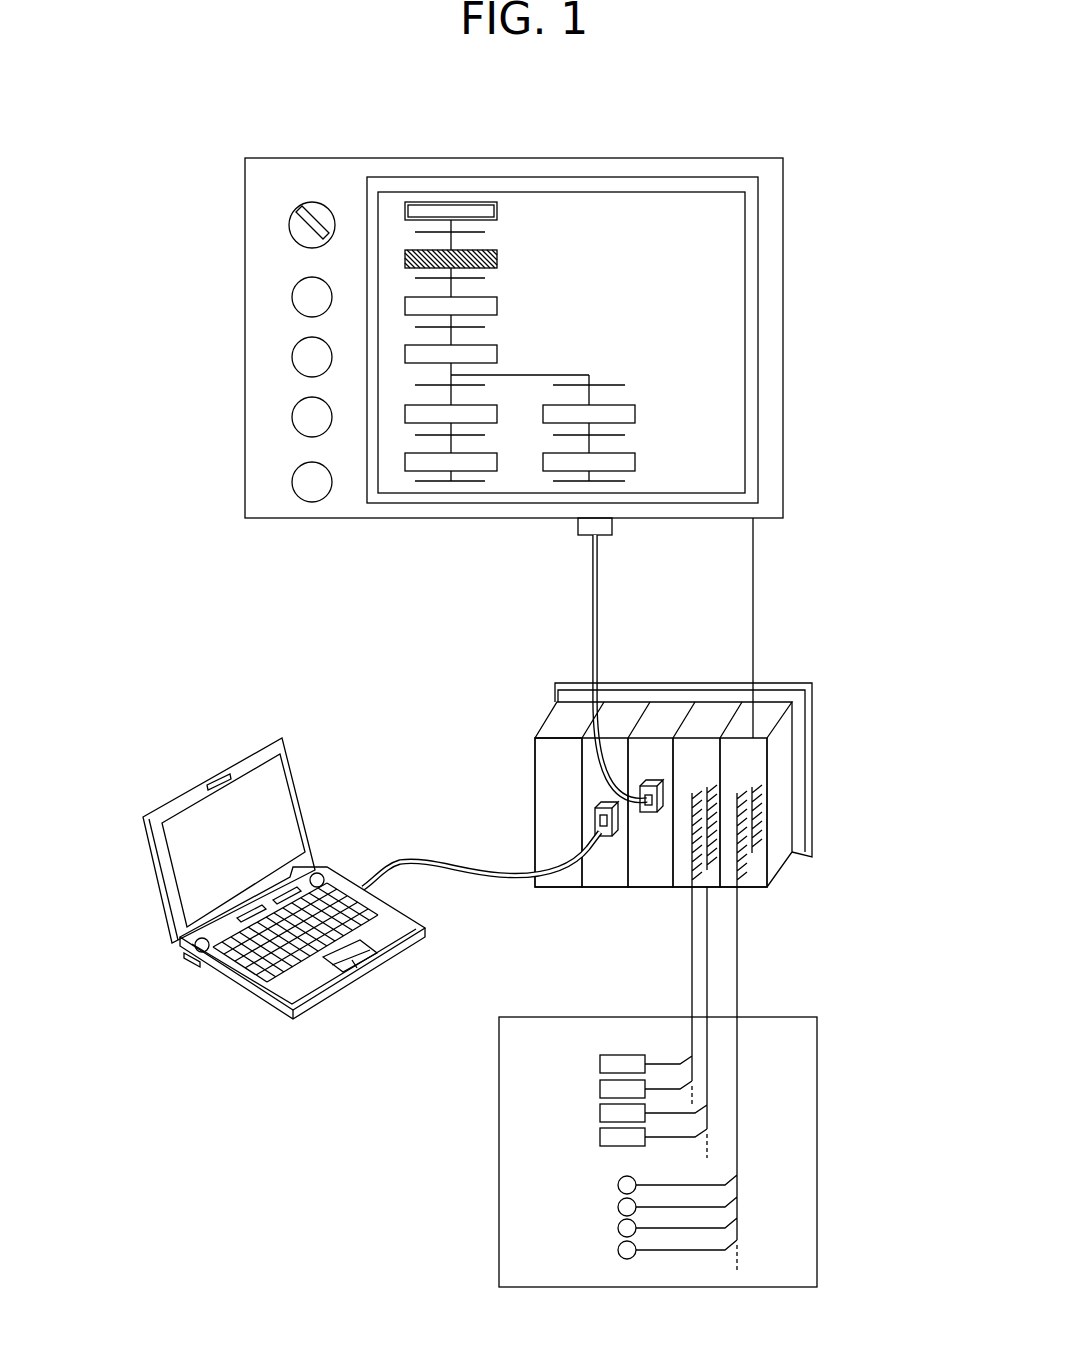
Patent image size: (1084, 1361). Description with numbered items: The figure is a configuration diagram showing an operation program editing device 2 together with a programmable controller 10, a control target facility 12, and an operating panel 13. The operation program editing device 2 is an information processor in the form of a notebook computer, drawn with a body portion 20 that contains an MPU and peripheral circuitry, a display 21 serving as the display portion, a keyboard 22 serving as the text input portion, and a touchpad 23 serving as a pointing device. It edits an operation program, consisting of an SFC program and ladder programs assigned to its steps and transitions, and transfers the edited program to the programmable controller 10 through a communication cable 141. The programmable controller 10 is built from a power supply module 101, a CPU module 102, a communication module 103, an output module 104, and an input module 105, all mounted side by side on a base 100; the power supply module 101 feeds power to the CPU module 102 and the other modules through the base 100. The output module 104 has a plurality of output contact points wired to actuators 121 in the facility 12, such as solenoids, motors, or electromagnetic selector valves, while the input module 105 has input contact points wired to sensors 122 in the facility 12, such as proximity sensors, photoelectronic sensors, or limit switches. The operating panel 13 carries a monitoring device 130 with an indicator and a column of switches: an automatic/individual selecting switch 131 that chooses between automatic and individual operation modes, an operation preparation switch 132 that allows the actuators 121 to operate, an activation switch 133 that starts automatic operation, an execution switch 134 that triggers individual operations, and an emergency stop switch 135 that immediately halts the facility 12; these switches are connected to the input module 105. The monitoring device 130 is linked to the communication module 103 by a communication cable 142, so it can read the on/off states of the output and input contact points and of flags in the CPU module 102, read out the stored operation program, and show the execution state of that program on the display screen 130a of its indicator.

The operation program editing device 2 is at (208, 750).
The programmable controller 10 is at (580, 645).
The control target facility 12 is at (603, 1017).
The operating panel 13 is at (383, 158).
The body portion 20 is at (218, 998).
The display 21 is at (253, 788).
The keyboard 22 is at (300, 903).
The touchpad 23 is at (343, 947).
The base 100 is at (813, 721).
The power supply module 101 is at (570, 713).
The CPU module 102 is at (622, 708).
The communication module 103 is at (667, 708).
The output module 104 is at (715, 708).
The input module 105 is at (767, 708).
The actuators 121 is at (600, 1130).
The sensors 122 is at (618, 1250).
The monitoring device 130 is at (676, 176).
The display screen 130a is at (729, 308).
The automatic/individual selecting switch 131 is at (288, 221).
The operation preparation switch 132 is at (291, 299).
The activation switch 133 is at (291, 359).
The execution switch 134 is at (291, 419).
The emergency stop switch 135 is at (291, 481).
The communication cable 141 is at (460, 865).
The communication cable 142 is at (598, 591).